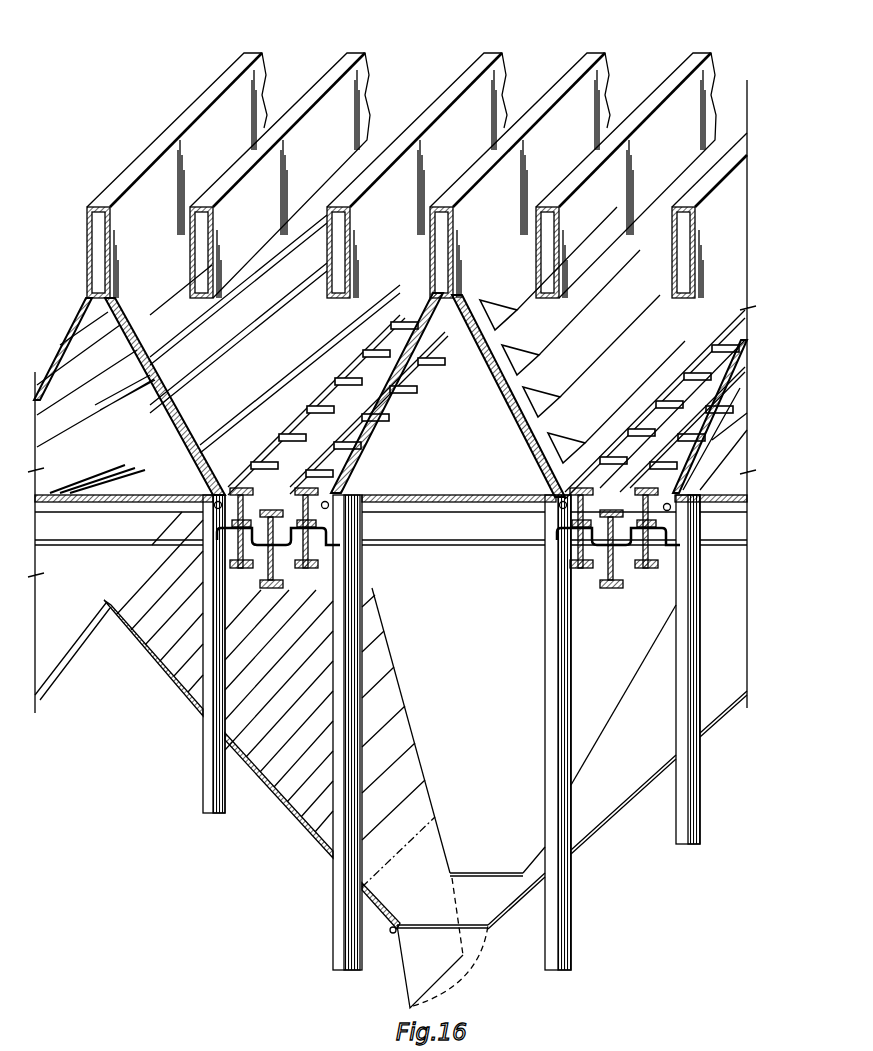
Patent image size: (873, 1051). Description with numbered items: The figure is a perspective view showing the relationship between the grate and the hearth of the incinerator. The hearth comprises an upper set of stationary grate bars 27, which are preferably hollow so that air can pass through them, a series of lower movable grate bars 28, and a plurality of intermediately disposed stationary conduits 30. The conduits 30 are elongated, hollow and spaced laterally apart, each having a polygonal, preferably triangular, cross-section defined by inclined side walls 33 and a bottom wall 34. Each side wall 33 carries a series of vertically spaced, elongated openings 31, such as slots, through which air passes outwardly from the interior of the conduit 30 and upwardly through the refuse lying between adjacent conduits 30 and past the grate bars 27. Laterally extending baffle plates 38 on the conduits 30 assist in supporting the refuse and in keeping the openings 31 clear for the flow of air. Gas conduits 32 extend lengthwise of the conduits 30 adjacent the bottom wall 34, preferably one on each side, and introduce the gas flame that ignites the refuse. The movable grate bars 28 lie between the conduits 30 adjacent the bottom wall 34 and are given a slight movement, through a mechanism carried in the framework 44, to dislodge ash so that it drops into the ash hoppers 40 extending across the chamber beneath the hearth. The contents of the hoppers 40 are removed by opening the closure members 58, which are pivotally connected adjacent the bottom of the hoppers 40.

The stationary grate bars 27 is at (190, 113).
The movable grate bars 28 is at (282, 586).
The stationary conduits 30 is at (127, 455).
The elongated openings 31 is at (540, 407).
The gas conduits 32 is at (218, 508).
The inclined side walls 33 is at (495, 395).
The bottom wall 34 is at (485, 503).
The baffle plates 38 is at (560, 448).
The ash hoppers 40 is at (297, 823).
The framework 44 is at (572, 856).
The closure members 58 is at (398, 976).